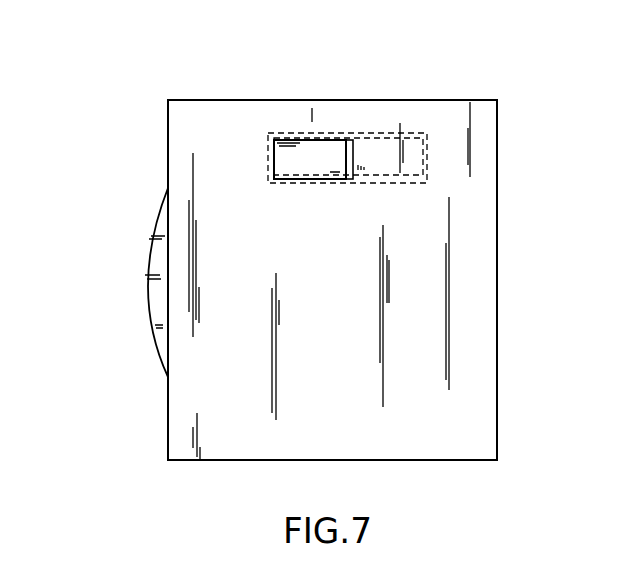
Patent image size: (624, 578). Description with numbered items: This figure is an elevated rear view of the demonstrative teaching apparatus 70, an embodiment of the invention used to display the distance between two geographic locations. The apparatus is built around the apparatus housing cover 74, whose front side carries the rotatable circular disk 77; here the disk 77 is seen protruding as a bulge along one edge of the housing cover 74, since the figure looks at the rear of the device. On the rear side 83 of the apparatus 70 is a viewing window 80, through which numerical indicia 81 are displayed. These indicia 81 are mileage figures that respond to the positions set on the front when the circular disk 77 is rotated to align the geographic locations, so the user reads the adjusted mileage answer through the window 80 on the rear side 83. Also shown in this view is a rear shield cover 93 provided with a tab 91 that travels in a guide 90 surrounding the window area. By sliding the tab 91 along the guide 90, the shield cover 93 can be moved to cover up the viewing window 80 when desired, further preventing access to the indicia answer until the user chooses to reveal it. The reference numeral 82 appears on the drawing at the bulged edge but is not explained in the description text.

The demonstrative teaching apparatus 70 is at (202, 90).
The apparatus housing cover 74 is at (392, 98).
The circular disk 77 is at (143, 311).
The viewing window 80 is at (322, 140).
The numerical indicia 81 is at (265, 170).
The bulged side wall 82 is at (155, 217).
The rear side 83 is at (415, 442).
The guide 90 is at (412, 181).
The tab 91 is at (356, 150).
The rear shield cover 93 is at (415, 148).